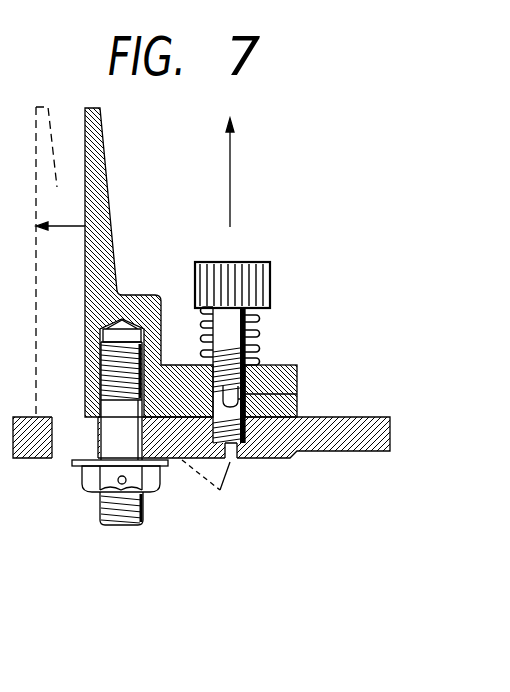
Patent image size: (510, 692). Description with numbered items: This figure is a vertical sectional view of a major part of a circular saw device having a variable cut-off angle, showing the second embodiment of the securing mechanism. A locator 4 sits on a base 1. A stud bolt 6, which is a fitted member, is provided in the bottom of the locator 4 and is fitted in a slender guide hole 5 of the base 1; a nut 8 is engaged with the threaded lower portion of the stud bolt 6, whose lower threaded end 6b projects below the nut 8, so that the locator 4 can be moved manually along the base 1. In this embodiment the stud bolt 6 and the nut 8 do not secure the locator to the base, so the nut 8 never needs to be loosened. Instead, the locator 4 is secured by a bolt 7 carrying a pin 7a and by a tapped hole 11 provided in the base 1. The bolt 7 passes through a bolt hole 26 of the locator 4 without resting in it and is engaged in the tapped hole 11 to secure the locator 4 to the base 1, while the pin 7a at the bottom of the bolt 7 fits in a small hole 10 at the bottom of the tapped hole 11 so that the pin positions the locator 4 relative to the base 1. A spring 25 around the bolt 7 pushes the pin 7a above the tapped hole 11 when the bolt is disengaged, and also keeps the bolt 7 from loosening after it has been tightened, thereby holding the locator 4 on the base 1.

The base 1 is at (355, 433).
The locator 4 is at (103, 162).
The slender guide hole 5 is at (70, 427).
The stud bolt 6 is at (85, 355).
The threaded end of bolt 6b is at (118, 515).
The bolt 7 is at (265, 335).
The pin 7a is at (297, 388).
The nut 8 is at (82, 480).
The small hole 10 is at (211, 492).
The tapped hole 11 is at (179, 360).
The spring 25 is at (262, 316).
The bolt hole 26 is at (297, 405).